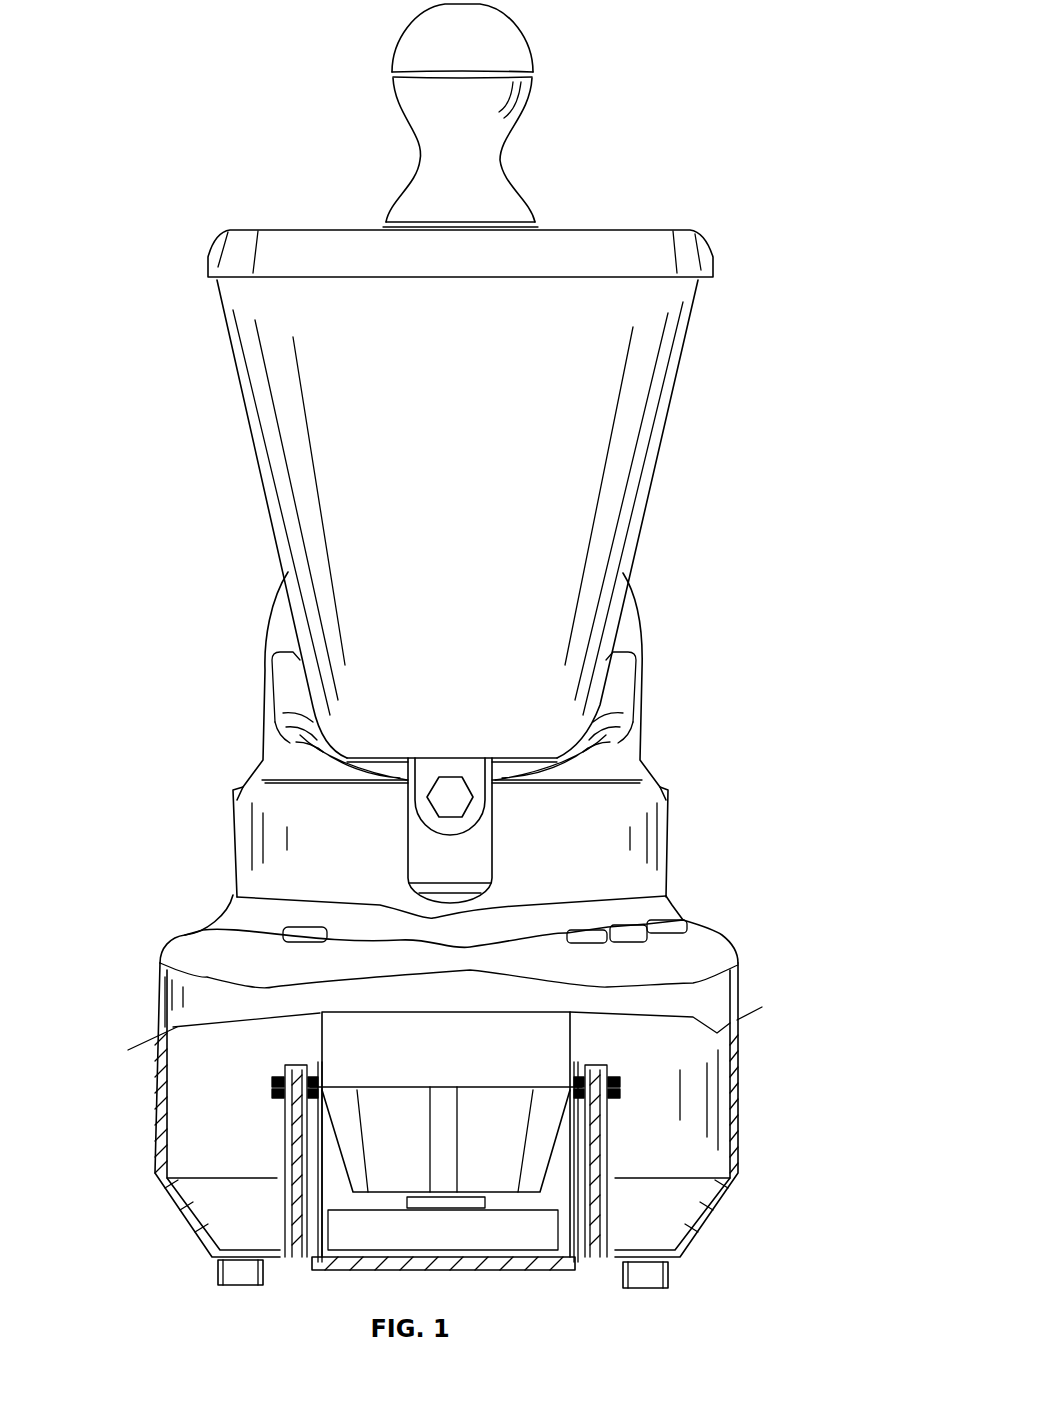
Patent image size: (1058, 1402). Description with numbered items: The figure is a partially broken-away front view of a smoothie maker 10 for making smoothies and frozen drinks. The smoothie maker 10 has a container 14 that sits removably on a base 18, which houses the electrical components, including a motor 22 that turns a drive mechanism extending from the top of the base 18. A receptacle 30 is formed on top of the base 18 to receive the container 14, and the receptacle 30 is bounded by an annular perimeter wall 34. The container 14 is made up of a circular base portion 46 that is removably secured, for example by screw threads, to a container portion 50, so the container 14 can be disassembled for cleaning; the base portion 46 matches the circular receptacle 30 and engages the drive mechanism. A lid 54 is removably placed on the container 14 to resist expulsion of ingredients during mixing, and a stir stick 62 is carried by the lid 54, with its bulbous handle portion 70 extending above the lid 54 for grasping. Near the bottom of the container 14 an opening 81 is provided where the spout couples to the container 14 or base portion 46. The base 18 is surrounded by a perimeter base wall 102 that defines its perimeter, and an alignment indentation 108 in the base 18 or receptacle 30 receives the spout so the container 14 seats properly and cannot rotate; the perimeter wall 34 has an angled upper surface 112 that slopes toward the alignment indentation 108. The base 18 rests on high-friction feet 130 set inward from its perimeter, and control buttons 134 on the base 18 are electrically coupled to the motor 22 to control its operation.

The smoothie maker 10 is at (210, 677).
The container 14 is at (673, 478).
The base 18 is at (150, 999).
The motor 22 is at (320, 1050).
The receptacle 30 is at (265, 618).
The perimeter wall 34 is at (633, 642).
The base portion 46 is at (377, 757).
The container portion 50 is at (248, 423).
The lid 54 is at (633, 214).
The stir stick 62 is at (548, 37).
The handle portion 70 is at (388, 94).
The opening 81 is at (450, 773).
The perimeter base wall 102 is at (740, 1078).
The alignment indentation 108 is at (422, 865).
The angled upper surface 112 is at (623, 698).
The feet 130 is at (217, 1266).
The buttons 134 is at (672, 898).